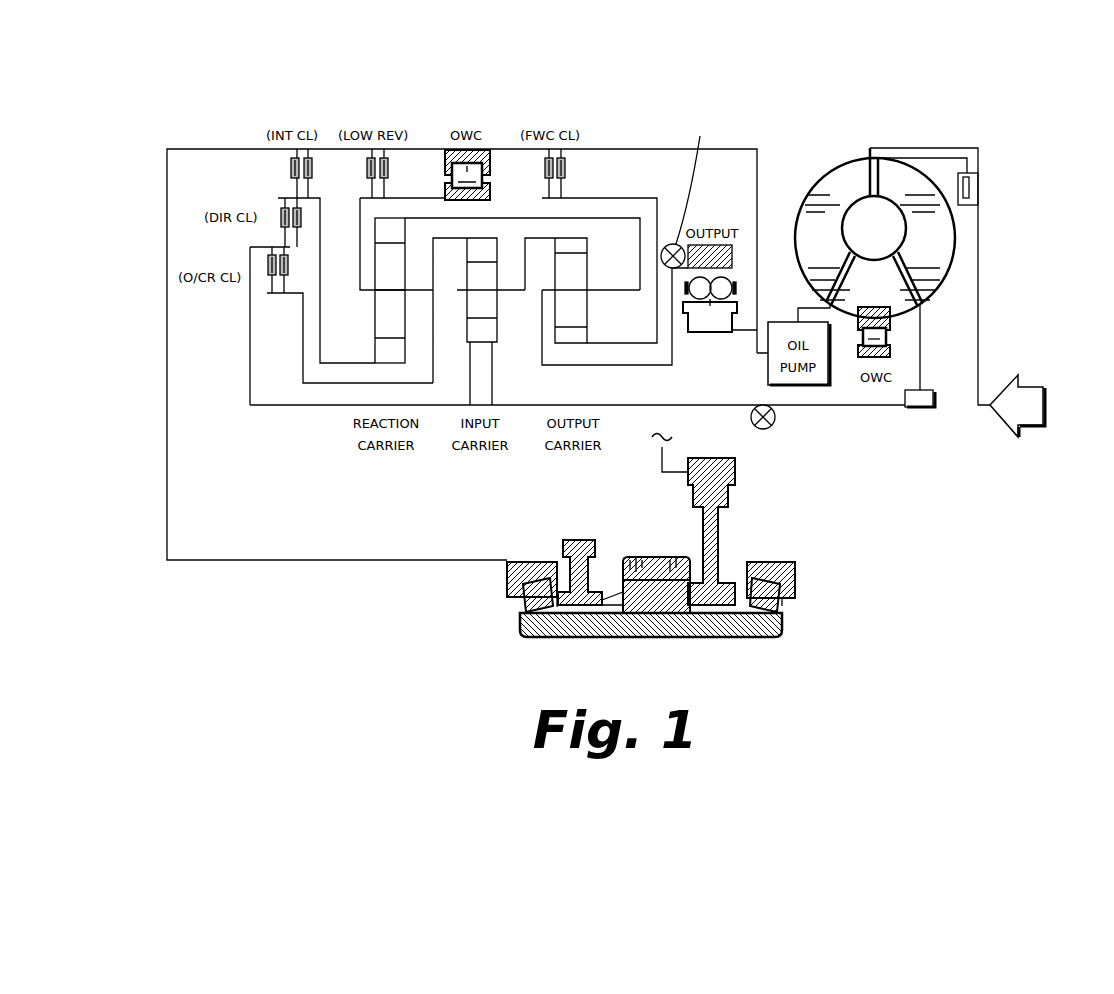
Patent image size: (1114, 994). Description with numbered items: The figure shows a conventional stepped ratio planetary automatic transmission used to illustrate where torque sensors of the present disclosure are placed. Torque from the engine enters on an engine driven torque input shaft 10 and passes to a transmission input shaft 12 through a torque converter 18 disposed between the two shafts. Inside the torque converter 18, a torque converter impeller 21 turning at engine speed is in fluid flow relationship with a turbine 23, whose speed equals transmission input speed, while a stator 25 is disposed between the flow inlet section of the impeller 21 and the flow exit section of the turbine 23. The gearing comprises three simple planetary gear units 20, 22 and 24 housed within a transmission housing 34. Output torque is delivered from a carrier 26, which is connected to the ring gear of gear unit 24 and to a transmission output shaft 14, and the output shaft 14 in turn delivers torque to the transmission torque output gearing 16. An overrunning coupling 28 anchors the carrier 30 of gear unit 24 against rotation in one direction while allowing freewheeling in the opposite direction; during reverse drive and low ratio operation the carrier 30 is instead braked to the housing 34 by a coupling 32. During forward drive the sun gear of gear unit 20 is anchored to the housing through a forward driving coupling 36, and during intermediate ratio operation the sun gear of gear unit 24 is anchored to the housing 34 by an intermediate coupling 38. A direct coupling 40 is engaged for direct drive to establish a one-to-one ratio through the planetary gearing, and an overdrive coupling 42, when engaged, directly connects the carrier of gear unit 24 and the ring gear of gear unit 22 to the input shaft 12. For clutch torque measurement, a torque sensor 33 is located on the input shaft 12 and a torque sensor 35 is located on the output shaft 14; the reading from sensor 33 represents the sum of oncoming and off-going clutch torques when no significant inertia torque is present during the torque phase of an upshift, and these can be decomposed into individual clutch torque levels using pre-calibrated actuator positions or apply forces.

The engine driven torque input shaft 10 is at (980, 400).
The transmission input shaft 12 is at (885, 407).
The transmission output shaft 14 is at (602, 365).
The transmission torque output gearing 16 is at (612, 560).
The torque converter 18 is at (879, 252).
The planetary gear unit 20 is at (570, 237).
The torque converter impeller 21 is at (832, 240).
The planetary gear unit 22 is at (480, 237).
The turbine 23 is at (940, 240).
The planetary gear unit 24 is at (390, 218).
The stator 25 is at (870, 278).
The carrier 26 is at (602, 290).
The overrunning coupling 28 is at (452, 156).
The carrier 30 is at (360, 243).
The coupling 32 is at (367, 170).
The torque sensor 33 is at (770, 428).
The transmission housing 34 is at (620, 149).
The torque sensor 35 is at (673, 244).
The forward driving coupling 36 is at (566, 168).
The intermediate coupling 38 is at (290, 168).
The direct coupling 40 is at (282, 216).
The overdrive coupling 42 is at (268, 262).